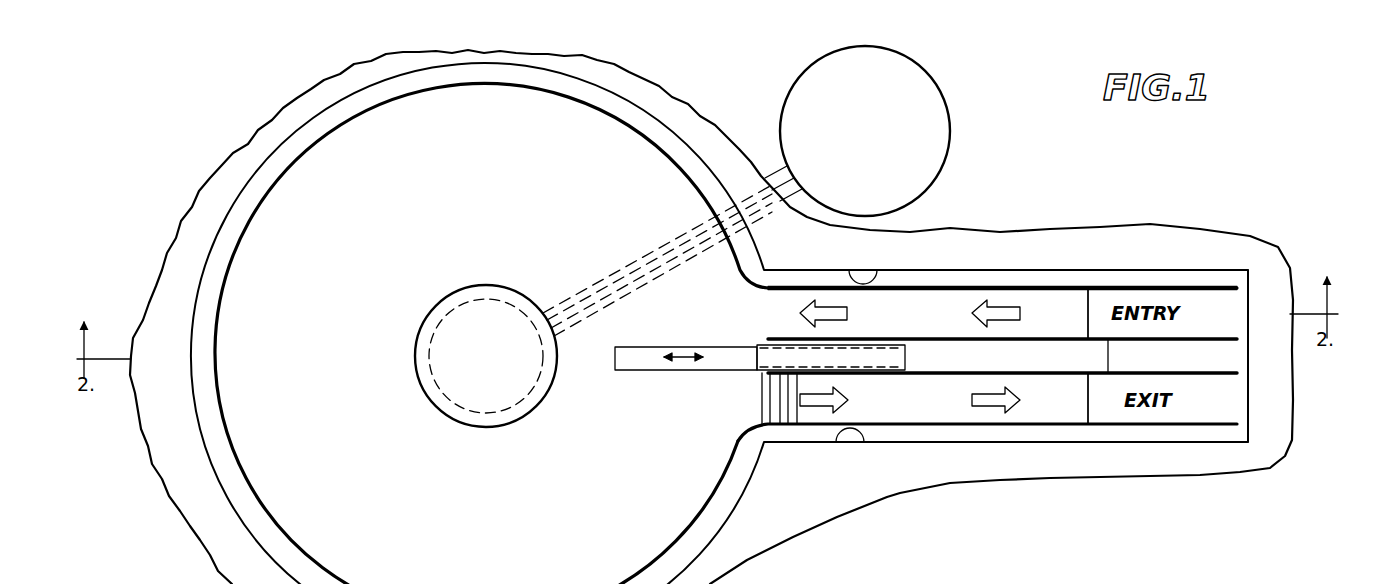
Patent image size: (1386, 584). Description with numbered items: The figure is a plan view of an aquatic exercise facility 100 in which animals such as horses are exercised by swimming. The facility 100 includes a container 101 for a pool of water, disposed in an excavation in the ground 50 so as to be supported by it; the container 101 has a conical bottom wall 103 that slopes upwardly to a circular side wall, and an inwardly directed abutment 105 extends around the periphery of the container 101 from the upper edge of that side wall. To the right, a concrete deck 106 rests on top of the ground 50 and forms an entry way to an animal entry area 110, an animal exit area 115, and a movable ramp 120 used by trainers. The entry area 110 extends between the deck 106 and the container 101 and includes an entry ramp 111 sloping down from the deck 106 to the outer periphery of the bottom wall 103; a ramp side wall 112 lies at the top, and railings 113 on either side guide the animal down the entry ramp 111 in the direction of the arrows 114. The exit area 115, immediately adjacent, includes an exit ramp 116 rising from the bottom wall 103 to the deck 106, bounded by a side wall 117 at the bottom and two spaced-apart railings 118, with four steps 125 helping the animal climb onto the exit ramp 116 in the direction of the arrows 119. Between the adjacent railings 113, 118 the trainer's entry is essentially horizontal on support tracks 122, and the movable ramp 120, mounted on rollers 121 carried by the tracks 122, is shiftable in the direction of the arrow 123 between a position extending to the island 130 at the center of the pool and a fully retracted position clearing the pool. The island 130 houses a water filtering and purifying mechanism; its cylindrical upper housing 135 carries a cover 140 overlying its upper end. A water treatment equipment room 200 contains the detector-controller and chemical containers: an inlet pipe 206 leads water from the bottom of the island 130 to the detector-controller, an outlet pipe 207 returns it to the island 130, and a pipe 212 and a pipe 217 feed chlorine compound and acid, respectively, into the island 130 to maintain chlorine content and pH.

The ground 50 is at (713, 140).
The aquatic exercise facility 100 is at (148, 127).
The container 101 is at (220, 212).
The bottom wall 103 is at (408, 343).
The abutment 105 is at (210, 321).
The deck 106 is at (1235, 302).
The entry area 110 is at (1118, 256).
The entry ramp 111 is at (930, 303).
The ramp side wall 112 is at (873, 270).
The railings 113 is at (1065, 333).
The arrows 114 is at (825, 307).
The exit area 115 is at (1158, 453).
The exit ramp 116 is at (925, 407).
The side wall 117 is at (858, 436).
The railings 118 is at (1043, 380).
The arrows 119 is at (817, 407).
The movable ramp 120 is at (643, 360).
The rollers 121 is at (840, 345).
The support tracks 122 is at (1002, 356).
The arrow 123 is at (688, 350).
The steps 125 is at (762, 403).
The island 130 is at (410, 355).
The upper housing 135 is at (452, 403).
The cover 140 is at (480, 340).
The water treatment equipment room 200 is at (949, 119).
The inlet pipe 206 is at (663, 260).
The outlet pipe 207 is at (710, 247).
The pipe 212 is at (617, 278).
The pipe 217 is at (580, 288).